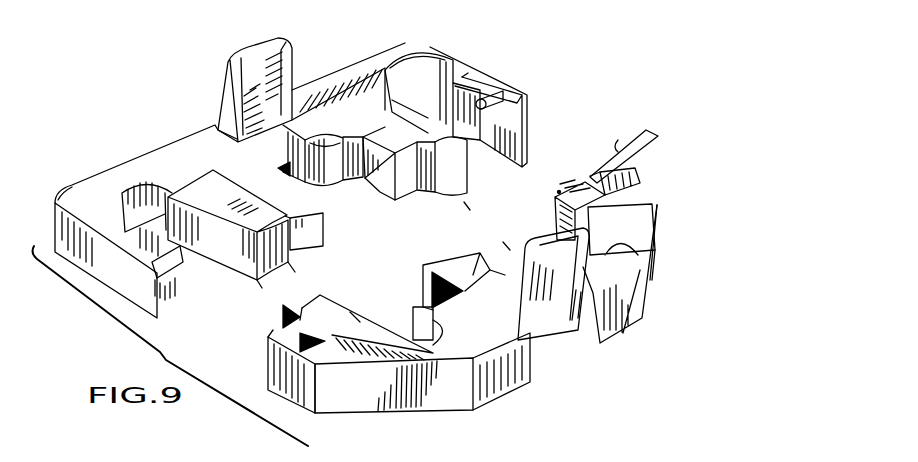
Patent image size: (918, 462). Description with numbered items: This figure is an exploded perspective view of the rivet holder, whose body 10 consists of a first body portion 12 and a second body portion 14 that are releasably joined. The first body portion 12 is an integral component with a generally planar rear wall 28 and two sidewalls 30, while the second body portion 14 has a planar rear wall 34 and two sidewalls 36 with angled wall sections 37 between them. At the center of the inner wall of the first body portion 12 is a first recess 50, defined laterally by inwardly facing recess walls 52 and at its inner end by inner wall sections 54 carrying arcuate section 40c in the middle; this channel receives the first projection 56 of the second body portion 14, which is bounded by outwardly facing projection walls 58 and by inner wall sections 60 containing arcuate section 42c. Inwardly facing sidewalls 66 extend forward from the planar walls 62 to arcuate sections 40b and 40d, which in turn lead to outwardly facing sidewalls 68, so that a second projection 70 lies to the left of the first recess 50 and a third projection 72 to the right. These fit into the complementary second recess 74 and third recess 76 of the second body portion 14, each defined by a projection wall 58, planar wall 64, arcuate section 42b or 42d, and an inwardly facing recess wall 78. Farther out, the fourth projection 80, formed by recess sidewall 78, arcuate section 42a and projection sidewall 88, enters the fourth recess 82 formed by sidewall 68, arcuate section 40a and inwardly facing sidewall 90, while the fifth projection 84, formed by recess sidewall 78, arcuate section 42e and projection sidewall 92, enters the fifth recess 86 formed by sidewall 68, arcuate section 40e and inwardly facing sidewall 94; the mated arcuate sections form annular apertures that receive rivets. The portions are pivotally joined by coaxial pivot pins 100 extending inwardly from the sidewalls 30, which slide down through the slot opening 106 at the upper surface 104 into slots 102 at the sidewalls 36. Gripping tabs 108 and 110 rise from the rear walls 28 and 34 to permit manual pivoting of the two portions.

The body 10 is at (604, 99).
The first body portion 12 is at (474, 57).
The second body portion 14 is at (667, 285).
The rear wall 28 is at (102, 172).
The sidewalls 30 is at (137, 291).
The rear wall 34 is at (503, 398).
The sidewalls 36 is at (307, 415).
The angled wall sections 37 is at (391, 400).
The arcuate section 40a is at (148, 182).
The arcuate section 40b is at (256, 287).
The arcuate section 40c is at (311, 130).
The arcuate section 40d is at (464, 202).
The arcuate section 40e is at (396, 64).
The arcuate section 42a is at (300, 294).
The arcuate section 42b is at (447, 328).
The arcuate section 42c is at (470, 281).
The arcuate section 42d is at (622, 241).
The arcuate section 42e is at (574, 176).
The first recess 50 is at (382, 218).
The recess walls 52 is at (385, 147).
The inner wall sections 54 is at (288, 170).
The first projection 56 is at (503, 242).
The projection walls 58 is at (423, 293).
The inner wall sections 60 is at (494, 230).
The planar walls 62 is at (285, 216).
The planar wall 64 is at (416, 310).
The inwardly facing sidewalls 66 is at (303, 272).
The outwardly facing sidewalls 68 is at (238, 259).
The second projection 70 is at (317, 240).
The third projection 72 is at (460, 173).
The second recess 74 is at (399, 312).
The third recess 76 is at (546, 222).
The inwardly facing recess wall 78 is at (350, 312).
The fourth projection 80 is at (278, 317).
The fourth recess 82 is at (77, 189).
The fifth projection 84 is at (559, 190).
The fifth recess 86 is at (437, 72).
The projection sidewall 88 is at (273, 328).
The inwardly facing sidewall 90 is at (180, 196).
The projection sidewall 92 is at (631, 134).
The inwardly facing sidewall 94 is at (503, 79).
The pivot pins 100 is at (522, 109).
The slots 102 is at (290, 371).
The upper surface 104 is at (347, 348).
The slot opening 106 is at (285, 322).
The gripping tab 108 is at (268, 55).
The gripping tab 110 is at (553, 333).